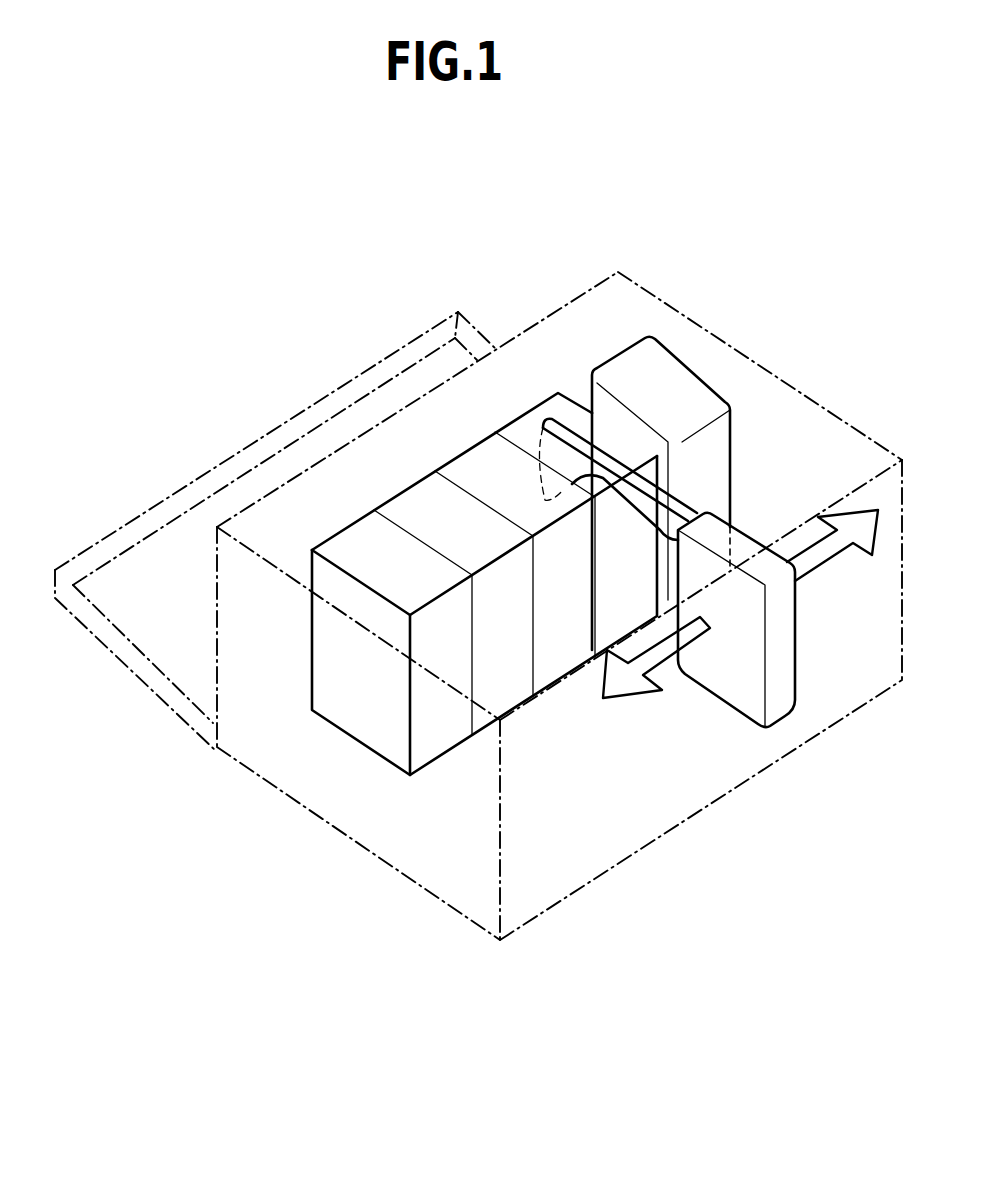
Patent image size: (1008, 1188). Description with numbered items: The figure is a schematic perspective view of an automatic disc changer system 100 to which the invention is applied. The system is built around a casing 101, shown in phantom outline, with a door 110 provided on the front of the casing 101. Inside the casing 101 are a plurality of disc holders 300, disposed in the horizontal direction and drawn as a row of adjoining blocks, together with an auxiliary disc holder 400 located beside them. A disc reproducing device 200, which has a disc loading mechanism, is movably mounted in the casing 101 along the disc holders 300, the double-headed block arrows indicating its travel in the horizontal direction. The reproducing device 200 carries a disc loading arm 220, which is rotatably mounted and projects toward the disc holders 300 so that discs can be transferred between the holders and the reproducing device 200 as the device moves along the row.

The automatic disc changer system 100 is at (795, 377).
The casing 101 is at (860, 433).
The door 110 is at (237, 452).
The disc reproducing device 200 is at (806, 650).
The disc loading arm 220 is at (585, 462).
The disc holders 300 is at (364, 517).
The auxiliary disc holder 400 is at (687, 390).